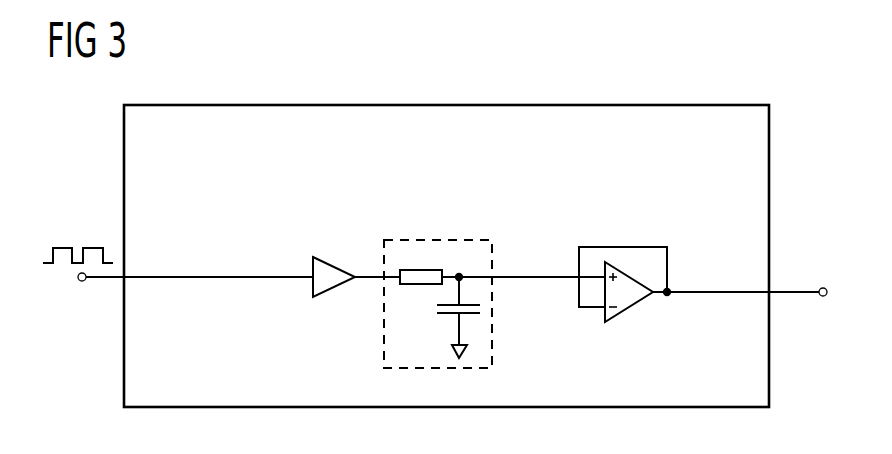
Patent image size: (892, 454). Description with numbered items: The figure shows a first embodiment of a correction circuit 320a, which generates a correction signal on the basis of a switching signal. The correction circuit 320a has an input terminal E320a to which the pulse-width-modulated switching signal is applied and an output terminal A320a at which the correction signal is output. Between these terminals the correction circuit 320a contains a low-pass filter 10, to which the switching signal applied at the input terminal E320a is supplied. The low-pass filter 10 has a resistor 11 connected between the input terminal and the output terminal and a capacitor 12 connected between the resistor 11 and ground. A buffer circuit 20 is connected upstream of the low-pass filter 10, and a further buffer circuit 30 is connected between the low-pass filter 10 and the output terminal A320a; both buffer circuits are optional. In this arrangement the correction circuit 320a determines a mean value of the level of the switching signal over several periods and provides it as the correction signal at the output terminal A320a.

The correction circuit 320a is at (472, 105).
The input terminal E320a is at (82, 283).
The output terminal A320a is at (825, 297).
The buffer circuit 20 is at (335, 265).
The low-pass filter 10 is at (452, 240).
The resistor 11 is at (423, 286).
The capacitor 12 is at (480, 309).
The buffer circuit 30 is at (630, 310).